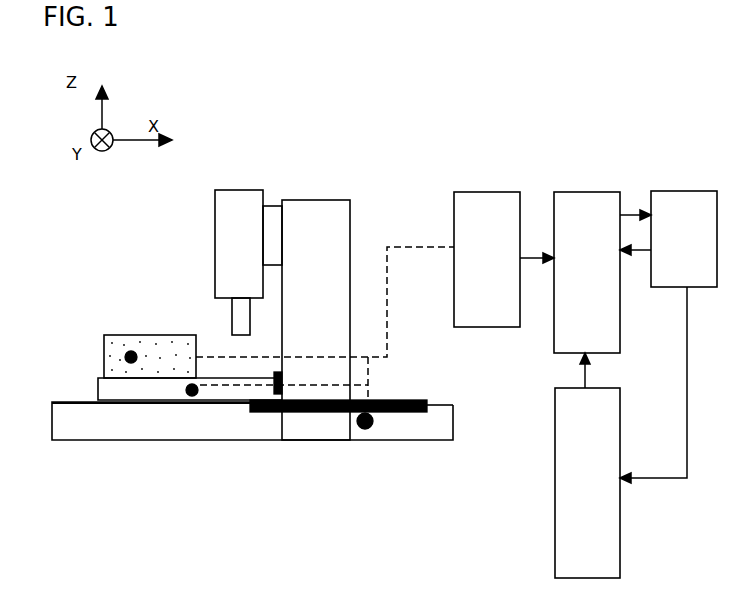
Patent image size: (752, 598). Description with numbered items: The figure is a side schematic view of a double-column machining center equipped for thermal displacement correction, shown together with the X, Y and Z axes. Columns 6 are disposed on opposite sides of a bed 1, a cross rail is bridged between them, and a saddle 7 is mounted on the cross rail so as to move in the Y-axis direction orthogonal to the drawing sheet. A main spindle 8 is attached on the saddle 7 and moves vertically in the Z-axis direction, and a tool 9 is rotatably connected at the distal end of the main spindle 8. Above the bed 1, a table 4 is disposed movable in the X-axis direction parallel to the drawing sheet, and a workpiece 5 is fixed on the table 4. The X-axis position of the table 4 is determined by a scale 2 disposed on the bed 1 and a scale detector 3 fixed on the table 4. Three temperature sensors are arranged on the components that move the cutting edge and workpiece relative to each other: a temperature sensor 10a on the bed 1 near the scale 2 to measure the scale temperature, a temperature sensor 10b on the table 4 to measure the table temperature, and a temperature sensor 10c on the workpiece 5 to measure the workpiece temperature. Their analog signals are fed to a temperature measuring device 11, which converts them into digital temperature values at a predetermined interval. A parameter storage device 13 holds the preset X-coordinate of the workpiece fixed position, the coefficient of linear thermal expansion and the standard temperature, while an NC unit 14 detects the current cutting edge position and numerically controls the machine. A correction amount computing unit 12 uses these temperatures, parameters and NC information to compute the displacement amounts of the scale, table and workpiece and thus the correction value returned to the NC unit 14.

The bed 1 is at (383, 428).
The scale 2 is at (397, 395).
The scale detector 3 is at (283, 378).
The table 4 is at (115, 390).
The workpiece 5 is at (187, 342).
The column 6 is at (298, 228).
The saddle 7 is at (277, 228).
The main spindle 8 is at (233, 227).
The tool 9 is at (228, 302).
The temperature sensor 10a is at (365, 430).
The temperature sensor 10b is at (193, 396).
The temperature sensor 10c is at (131, 357).
The temperature measuring device 11 is at (487, 248).
The correction amount computing unit 12 is at (587, 261).
The parameter storage device 13 is at (565, 483).
The NC unit 14 is at (684, 228).